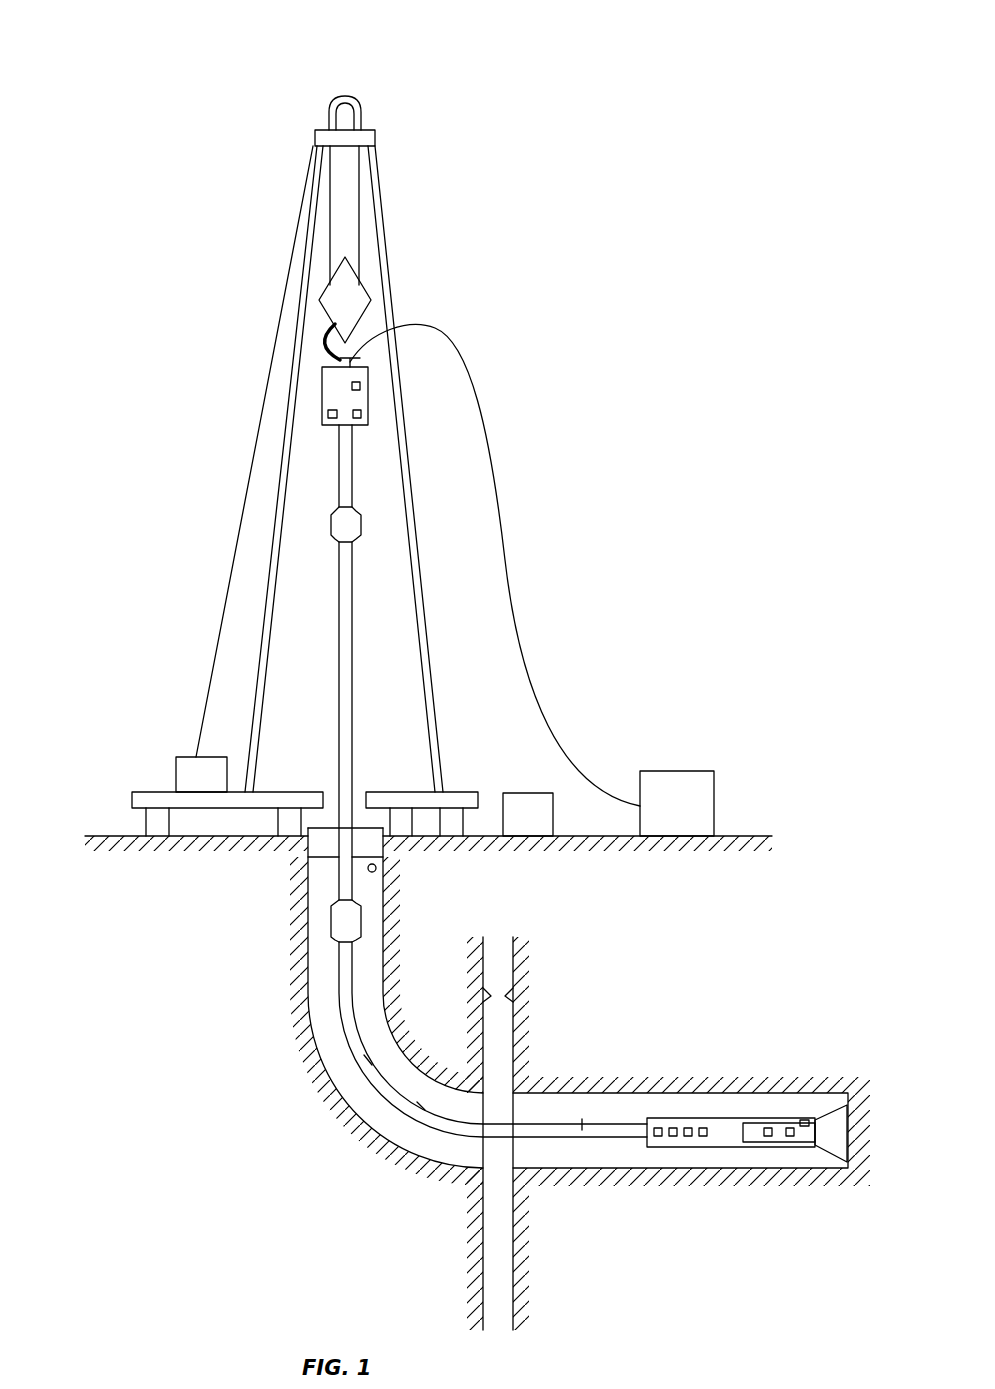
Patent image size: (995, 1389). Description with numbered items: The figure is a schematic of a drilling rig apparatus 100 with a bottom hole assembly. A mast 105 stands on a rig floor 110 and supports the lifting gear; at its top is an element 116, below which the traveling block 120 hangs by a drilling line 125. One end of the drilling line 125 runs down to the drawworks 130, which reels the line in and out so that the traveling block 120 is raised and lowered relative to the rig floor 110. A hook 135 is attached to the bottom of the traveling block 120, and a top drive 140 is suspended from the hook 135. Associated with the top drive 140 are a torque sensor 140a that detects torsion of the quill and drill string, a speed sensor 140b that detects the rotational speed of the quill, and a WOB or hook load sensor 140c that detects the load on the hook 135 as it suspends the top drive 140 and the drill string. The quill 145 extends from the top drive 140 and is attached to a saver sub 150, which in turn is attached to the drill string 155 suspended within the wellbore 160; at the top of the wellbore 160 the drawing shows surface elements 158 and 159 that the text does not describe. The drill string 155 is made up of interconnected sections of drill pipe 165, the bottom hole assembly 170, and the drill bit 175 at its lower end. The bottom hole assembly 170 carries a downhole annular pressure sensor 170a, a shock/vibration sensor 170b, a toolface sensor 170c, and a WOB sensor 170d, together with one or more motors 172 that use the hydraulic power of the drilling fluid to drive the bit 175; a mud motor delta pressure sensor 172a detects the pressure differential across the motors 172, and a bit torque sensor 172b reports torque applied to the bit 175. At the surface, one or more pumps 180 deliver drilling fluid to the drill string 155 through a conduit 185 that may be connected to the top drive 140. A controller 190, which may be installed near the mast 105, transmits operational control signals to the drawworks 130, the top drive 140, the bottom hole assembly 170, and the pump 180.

The apparatus 100 is at (253, 63).
The mast 105 is at (384, 178).
The rig floor 110 is at (132, 800).
The crown block 116 is at (364, 100).
The traveling block 120 is at (375, 300).
The drilling line 125 is at (312, 178).
The drawworks 130 is at (176, 765).
The hook 135 is at (323, 340).
The top drive 140 is at (324, 402).
The torque sensor 140a is at (328, 414).
The speed sensor 140b is at (361, 386).
The WOB or hook load sensor 140c is at (362, 414).
The quill 145 is at (338, 460).
The saver sub 150 is at (331, 520).
The drill string 155 is at (315, 598).
The wellhead 158 is at (308, 855).
The blowout preventer 159 is at (380, 870).
The wellbore 160 is at (320, 990).
The drill pipe 165 is at (338, 722).
The bottom hole assembly 170 is at (738, 1137).
The downhole annular pressure sensor 170a is at (657, 1138).
The shock/vibration sensor 170b is at (673, 1128).
The toolface sensor 170c is at (688, 1138).
The WOB sensor 170d is at (704, 1128).
The motors 172 is at (781, 1142).
The mud motor delta pressure sensor 172a is at (768, 1128).
The bit torque sensor 172b is at (790, 1128).
The drill bit 175 is at (833, 1110).
The pumps 180 is at (678, 771).
The conduit 185 is at (536, 702).
The controller 190 is at (524, 793).